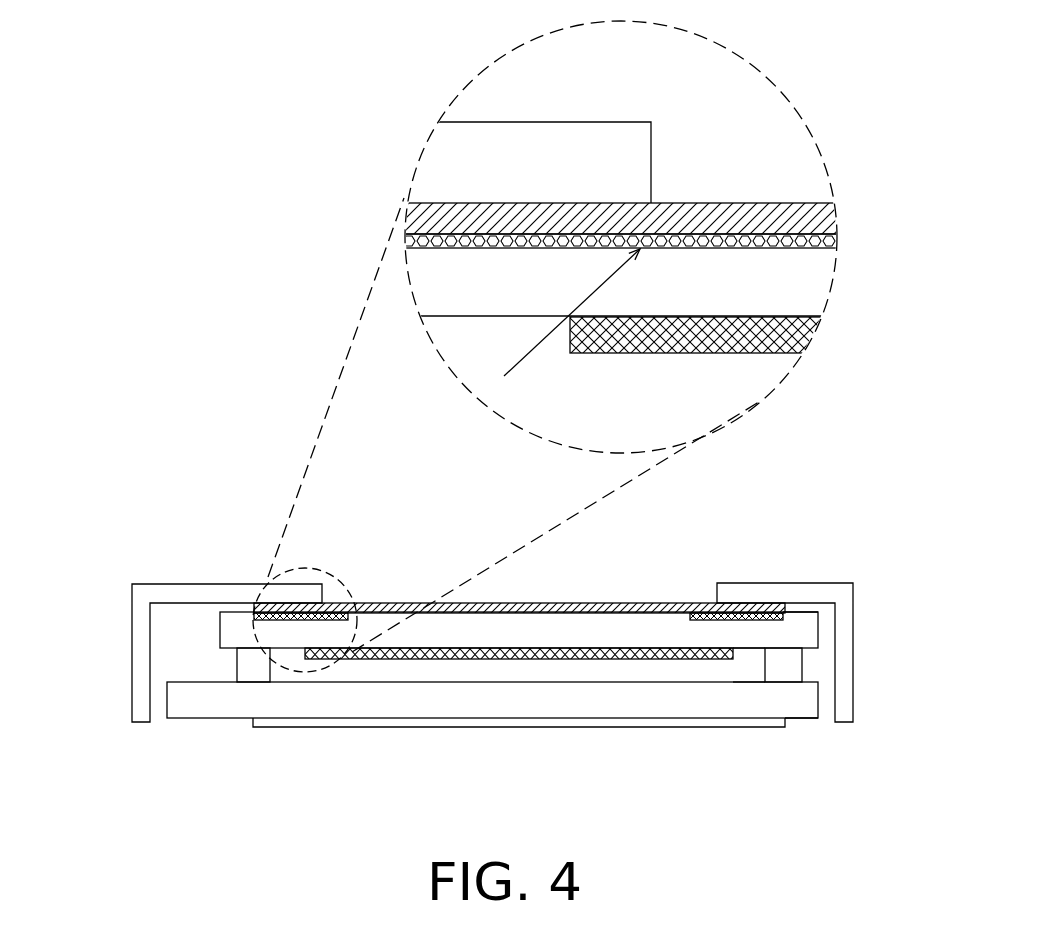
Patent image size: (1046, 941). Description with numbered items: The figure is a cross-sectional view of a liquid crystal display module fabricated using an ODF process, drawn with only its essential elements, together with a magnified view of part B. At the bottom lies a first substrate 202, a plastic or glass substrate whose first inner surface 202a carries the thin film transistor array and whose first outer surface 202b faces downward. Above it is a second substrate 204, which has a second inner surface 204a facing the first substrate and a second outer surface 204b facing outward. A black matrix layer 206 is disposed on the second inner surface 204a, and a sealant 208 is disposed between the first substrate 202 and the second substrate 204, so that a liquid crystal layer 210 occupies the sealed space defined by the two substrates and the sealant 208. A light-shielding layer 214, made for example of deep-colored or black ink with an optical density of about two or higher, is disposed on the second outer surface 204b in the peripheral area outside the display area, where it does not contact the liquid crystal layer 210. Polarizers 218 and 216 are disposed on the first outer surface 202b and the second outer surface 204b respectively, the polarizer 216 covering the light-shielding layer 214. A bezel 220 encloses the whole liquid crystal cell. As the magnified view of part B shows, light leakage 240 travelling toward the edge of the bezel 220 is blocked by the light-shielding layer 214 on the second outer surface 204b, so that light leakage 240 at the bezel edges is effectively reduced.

The first substrate 202 is at (192, 703).
The first inner surface 202a is at (742, 681).
The first outer surface 202b is at (800, 718).
The second substrate 204 is at (232, 632).
The second inner surface 204a is at (749, 650).
The second outer surface 204b is at (800, 612).
The black matrix layer 206 is at (360, 661).
The sealant 208 is at (247, 663).
The liquid crystal layer 210 is at (538, 671).
The light-shielding layer 214 is at (277, 615).
The polarizer 216 is at (270, 612).
The polarizer 218 is at (299, 721).
The bezel 220 is at (139, 594).
The light leakage 240 is at (600, 287).
The magnified view of part B is at (813, 137).